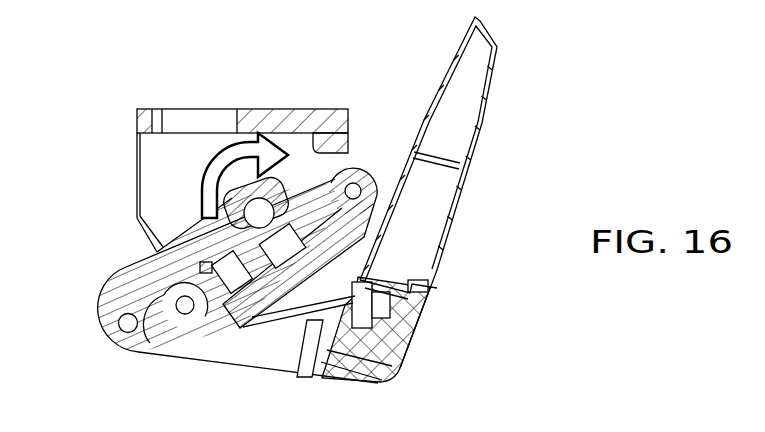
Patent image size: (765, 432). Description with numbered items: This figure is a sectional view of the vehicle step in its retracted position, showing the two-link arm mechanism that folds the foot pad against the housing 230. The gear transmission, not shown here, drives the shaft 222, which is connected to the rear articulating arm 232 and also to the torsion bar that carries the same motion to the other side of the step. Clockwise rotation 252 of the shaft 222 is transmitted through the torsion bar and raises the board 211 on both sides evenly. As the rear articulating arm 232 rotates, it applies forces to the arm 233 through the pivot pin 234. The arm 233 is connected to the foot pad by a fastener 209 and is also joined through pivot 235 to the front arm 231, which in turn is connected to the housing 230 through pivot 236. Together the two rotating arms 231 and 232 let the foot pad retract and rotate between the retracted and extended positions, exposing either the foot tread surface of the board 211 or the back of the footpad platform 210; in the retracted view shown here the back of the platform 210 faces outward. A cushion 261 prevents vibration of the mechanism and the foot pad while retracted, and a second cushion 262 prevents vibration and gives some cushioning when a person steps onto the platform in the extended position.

The fastener 209 is at (389, 315).
The footpad platform 210 is at (479, 116).
The board 211 is at (455, 62).
The shaft 222 is at (252, 210).
The housing 230 is at (245, 110).
The front arm 231 is at (373, 212).
The rear articulating arm 232 is at (119, 272).
The arm 233 is at (298, 374).
The pivot pin 234 is at (122, 330).
The pivot 235 is at (182, 316).
The pivot 236 is at (350, 184).
The clockwise rotation 252 is at (207, 172).
The cushion 261 is at (281, 227).
The cushion 262 is at (213, 263).